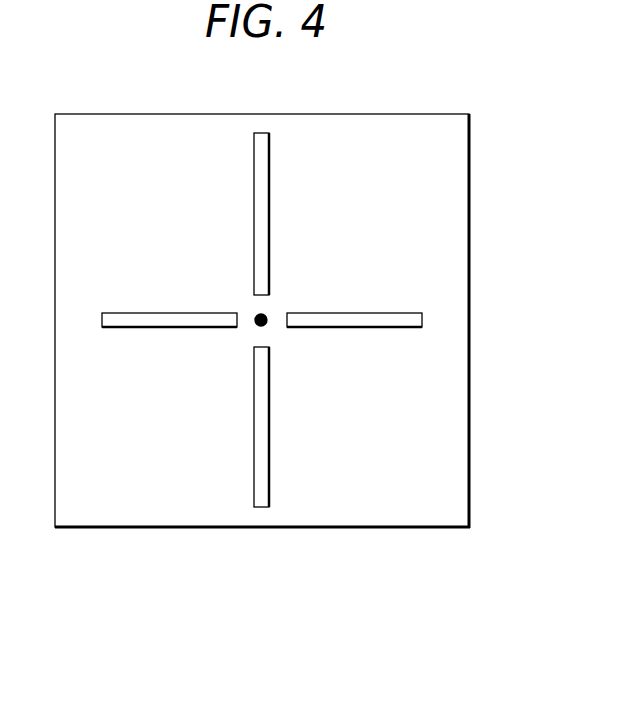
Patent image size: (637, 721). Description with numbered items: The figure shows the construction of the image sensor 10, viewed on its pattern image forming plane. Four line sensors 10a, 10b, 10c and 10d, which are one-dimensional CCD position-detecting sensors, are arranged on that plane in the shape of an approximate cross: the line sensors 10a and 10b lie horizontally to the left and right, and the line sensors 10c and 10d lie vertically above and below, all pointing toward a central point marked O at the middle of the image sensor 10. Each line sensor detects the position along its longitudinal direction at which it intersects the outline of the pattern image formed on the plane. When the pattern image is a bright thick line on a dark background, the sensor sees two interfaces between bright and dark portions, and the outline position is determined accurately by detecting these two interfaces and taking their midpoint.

The image sensor 10 is at (470, 317).
The line sensor 10a is at (168, 312).
The line sensor 10b is at (355, 312).
The line sensor 10c is at (270, 210).
The line sensor 10d is at (270, 423).
The center point O is at (257, 326).